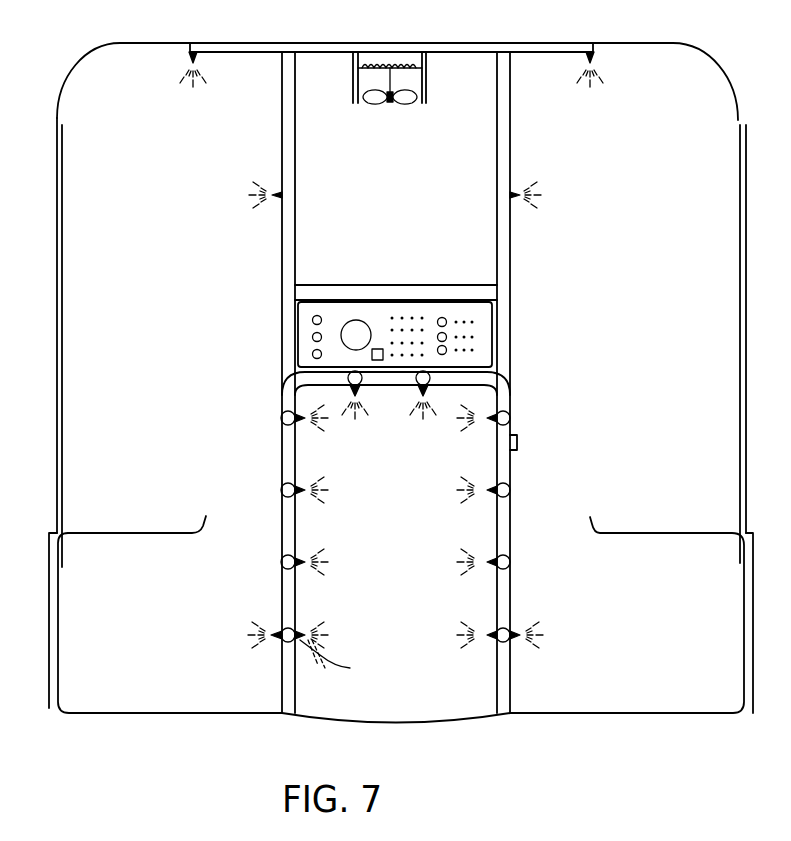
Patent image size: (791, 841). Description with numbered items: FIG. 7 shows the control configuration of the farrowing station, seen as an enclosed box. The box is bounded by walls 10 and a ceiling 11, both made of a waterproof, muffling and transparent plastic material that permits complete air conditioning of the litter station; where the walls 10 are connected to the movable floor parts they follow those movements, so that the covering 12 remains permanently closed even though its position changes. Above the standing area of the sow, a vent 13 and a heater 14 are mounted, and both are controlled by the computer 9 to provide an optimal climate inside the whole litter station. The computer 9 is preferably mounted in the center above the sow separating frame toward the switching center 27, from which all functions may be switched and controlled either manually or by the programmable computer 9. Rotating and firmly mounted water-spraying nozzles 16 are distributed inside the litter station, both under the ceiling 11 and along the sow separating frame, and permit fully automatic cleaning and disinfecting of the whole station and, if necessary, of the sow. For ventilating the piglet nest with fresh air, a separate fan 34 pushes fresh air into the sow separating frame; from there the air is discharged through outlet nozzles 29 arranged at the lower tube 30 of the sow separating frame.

The computer 9 is at (377, 348).
The walls 10 is at (60, 546).
The ceiling 11 is at (155, 26).
The covering 12 is at (62, 291).
The vent 13 is at (366, 97).
The heater 14 is at (414, 68).
The water-spraying nozzles 16 is at (588, 72).
The switching center 27 is at (432, 335).
The outlet nozzles 29 is at (492, 636).
The lower tube 30 is at (499, 633).
The fan 34 is at (516, 442).